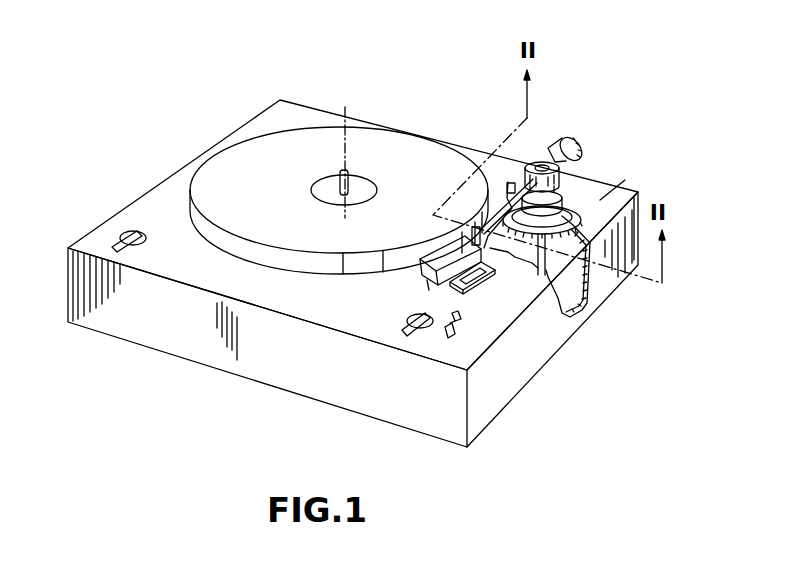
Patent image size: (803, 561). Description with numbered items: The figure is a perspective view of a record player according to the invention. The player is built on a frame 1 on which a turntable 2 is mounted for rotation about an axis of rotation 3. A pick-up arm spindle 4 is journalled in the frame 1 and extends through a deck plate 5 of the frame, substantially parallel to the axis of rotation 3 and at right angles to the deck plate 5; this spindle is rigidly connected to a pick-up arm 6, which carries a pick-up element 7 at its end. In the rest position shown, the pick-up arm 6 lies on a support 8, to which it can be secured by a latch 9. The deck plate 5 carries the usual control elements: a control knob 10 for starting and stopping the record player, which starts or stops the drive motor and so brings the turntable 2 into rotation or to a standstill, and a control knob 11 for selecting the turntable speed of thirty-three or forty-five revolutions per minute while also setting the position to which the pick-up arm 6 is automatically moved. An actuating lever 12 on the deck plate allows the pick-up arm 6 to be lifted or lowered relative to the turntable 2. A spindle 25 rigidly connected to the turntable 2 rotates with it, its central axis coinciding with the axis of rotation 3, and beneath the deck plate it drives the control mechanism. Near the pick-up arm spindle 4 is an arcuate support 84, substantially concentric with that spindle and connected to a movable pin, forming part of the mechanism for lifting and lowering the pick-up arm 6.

The frame 1 is at (608, 192).
The turntable 2 is at (427, 152).
The axis of rotation 3 is at (343, 143).
The pick-up arm spindle 4 is at (586, 299).
The deck plate 5 is at (366, 326).
The pick-up arm 6 is at (500, 190).
The pick-up element 7 is at (442, 257).
The support 8 is at (478, 282).
The latch 9 is at (490, 246).
The control knob 10 is at (413, 335).
The control knob 11 is at (120, 250).
The actuating lever 12 is at (459, 320).
The spindle 25 is at (350, 178).
The arcuate support 84 is at (518, 163).